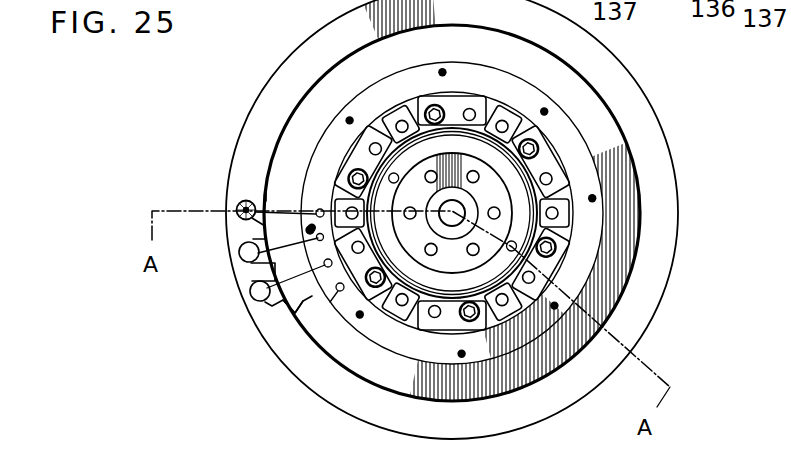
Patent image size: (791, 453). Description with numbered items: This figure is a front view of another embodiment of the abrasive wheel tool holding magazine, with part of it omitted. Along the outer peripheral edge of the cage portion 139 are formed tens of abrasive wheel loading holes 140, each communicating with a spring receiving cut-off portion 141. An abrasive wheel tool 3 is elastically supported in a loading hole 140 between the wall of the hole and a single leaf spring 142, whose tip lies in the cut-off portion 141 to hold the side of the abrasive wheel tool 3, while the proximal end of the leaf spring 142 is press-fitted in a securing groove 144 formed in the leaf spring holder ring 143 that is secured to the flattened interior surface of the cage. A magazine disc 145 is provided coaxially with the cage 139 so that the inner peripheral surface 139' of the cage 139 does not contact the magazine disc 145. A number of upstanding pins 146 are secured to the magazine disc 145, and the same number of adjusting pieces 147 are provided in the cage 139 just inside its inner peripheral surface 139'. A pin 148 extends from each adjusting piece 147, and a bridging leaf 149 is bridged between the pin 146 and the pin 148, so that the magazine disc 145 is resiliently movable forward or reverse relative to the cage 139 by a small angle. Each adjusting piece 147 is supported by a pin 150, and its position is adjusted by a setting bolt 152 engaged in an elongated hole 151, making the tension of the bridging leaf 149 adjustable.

The abrasive wheel tool 3 is at (246, 200).
The cage portion 139 is at (452, 219).
The inner peripheral surface 139' is at (415, 213).
The abrasive wheel loading hole 140 is at (241, 258).
The spring receiving cut-off portion 141 is at (262, 304).
The leaf spring 142 is at (287, 320).
The leaf spring holder ring 143 is at (384, 337).
The securing groove 144 is at (340, 292).
The magazine disc 145 is at (487, 142).
The upstanding pin 146 is at (500, 212).
The adjusting piece 147 is at (552, 178).
The pin 148 is at (477, 174).
The bridging leaf 149 is at (430, 171).
The pin 150 is at (469, 108).
The elongated hole 151 is at (536, 146).
The setting bolt 152 is at (555, 248).